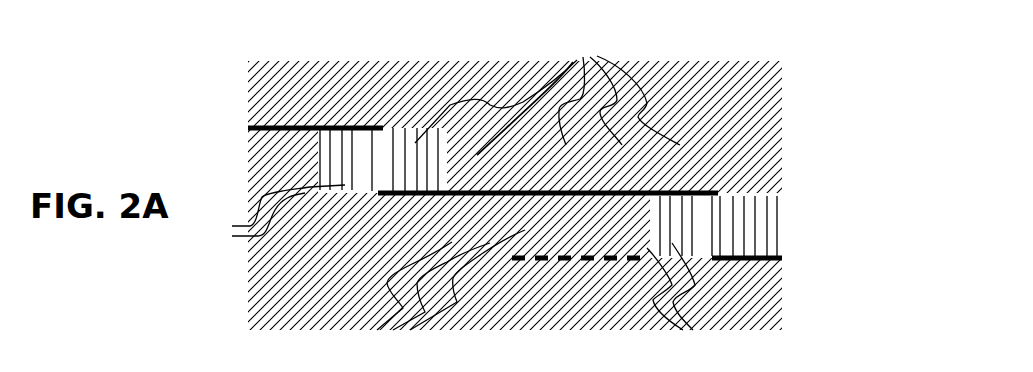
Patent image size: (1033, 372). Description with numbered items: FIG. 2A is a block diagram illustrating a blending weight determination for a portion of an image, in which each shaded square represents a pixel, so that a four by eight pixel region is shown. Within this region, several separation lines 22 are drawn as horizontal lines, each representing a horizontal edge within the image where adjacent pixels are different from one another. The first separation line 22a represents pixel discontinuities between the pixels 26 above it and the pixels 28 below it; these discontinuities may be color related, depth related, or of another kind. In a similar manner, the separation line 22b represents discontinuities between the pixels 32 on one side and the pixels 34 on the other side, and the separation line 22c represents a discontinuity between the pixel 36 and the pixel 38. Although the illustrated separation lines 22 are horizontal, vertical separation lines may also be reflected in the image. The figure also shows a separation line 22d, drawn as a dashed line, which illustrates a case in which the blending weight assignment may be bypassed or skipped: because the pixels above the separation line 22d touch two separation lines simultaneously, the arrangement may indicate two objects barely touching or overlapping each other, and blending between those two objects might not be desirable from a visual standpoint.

The separation lines 22 is at (241, 130).
The separation line 22a is at (275, 126).
The separation line 22b is at (405, 196).
The separation line 22c is at (745, 262).
The separation line 22d is at (612, 273).
The pixels 26 is at (358, 78).
The pixels 28 is at (275, 212).
The pixels 32 is at (547, 96).
The pixels 34 is at (537, 292).
The pixel 36 is at (763, 244).
The pixel 38 is at (747, 310).